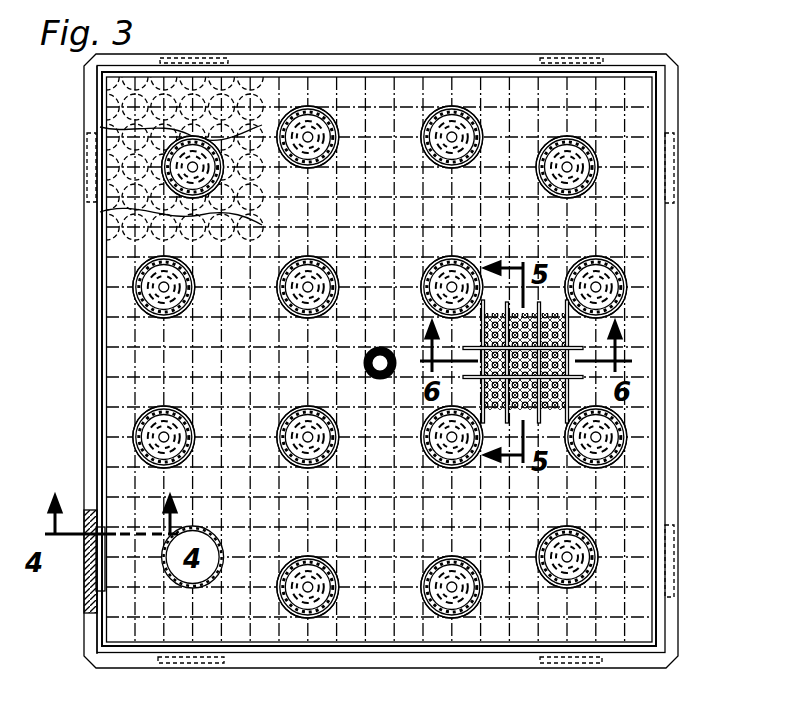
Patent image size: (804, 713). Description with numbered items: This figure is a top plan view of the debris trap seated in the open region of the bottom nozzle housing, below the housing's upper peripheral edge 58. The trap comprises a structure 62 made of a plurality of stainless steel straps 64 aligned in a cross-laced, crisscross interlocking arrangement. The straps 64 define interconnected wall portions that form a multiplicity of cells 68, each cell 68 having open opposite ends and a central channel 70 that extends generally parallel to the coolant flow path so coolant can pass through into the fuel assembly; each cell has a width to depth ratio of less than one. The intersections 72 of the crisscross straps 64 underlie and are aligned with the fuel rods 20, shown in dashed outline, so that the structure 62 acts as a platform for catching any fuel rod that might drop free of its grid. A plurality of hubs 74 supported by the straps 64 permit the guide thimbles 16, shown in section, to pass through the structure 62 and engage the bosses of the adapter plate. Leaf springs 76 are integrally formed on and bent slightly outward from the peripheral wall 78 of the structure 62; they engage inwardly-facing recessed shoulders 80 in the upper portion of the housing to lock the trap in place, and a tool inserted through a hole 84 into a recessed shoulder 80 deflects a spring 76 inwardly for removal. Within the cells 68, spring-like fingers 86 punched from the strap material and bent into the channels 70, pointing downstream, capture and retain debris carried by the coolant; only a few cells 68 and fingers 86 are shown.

The guide thimbles 16 is at (319, 104).
The fuel rods 20 is at (130, 128).
The upper peripheral edge 58 is at (668, 470).
The debris trap structure 62 is at (660, 628).
The straps 64 is at (630, 158).
The cells 68 is at (373, 145).
The central channel 70 is at (524, 108).
The intersections 72 is at (130, 236).
The hubs 74 is at (460, 106).
The leaf springs 76 is at (168, 56).
The peripheral wall 78 is at (102, 415).
The recessed shoulders 80 is at (668, 137).
The hole 84 is at (82, 555).
The spring-like fingers 86 is at (541, 410).